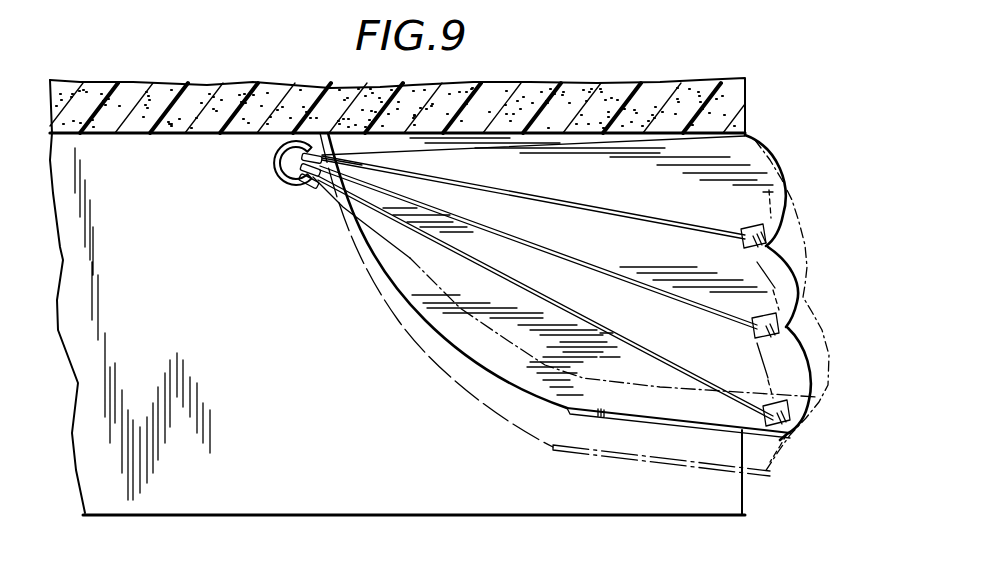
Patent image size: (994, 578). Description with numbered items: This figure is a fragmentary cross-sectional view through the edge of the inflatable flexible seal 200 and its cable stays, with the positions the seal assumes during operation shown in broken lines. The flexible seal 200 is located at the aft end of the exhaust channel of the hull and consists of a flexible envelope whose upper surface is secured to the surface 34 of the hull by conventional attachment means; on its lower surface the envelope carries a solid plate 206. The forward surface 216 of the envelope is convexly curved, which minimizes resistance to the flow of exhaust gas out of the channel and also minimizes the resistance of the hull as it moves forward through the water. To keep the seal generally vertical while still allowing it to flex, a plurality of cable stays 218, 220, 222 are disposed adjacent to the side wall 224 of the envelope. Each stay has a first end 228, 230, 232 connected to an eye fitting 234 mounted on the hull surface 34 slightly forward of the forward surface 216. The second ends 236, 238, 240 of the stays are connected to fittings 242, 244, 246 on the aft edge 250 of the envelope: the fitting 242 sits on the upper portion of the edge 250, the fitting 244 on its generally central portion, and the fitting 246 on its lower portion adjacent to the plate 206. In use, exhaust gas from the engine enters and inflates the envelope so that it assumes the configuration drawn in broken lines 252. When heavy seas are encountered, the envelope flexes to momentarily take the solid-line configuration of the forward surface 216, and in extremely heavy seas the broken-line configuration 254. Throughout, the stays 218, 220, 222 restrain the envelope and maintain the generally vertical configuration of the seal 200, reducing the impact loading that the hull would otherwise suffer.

The surface of the hull 34 is at (138, 137).
The flexible seal 200 is at (806, 188).
The solid plate 206 is at (785, 438).
The forward surface of the envelope 216 is at (515, 390).
The cable stay 218 is at (562, 202).
The cable stay 220 is at (563, 256).
The cable stay 222 is at (567, 290).
The side wall of the envelope 224 is at (727, 152).
The first end of cable stay 228 is at (350, 141).
The first end of cable stay 230 is at (355, 171).
The first end of cable stay 232 is at (321, 190).
The eye fitting 234 is at (280, 180).
The second end of cable stay 236 is at (735, 238).
The second end of cable stay 238 is at (758, 318).
The second end of cable stay 240 is at (758, 400).
The fitting 242 is at (770, 217).
The fitting 244 is at (797, 315).
The fitting 246 is at (787, 405).
The aft edge of the envelope 250 is at (798, 270).
The broken line inflated configuration 252 is at (448, 374).
The broken line configuration for extremely heavy seas 254 is at (478, 325).